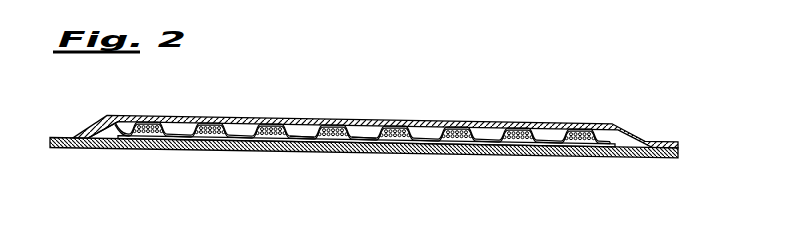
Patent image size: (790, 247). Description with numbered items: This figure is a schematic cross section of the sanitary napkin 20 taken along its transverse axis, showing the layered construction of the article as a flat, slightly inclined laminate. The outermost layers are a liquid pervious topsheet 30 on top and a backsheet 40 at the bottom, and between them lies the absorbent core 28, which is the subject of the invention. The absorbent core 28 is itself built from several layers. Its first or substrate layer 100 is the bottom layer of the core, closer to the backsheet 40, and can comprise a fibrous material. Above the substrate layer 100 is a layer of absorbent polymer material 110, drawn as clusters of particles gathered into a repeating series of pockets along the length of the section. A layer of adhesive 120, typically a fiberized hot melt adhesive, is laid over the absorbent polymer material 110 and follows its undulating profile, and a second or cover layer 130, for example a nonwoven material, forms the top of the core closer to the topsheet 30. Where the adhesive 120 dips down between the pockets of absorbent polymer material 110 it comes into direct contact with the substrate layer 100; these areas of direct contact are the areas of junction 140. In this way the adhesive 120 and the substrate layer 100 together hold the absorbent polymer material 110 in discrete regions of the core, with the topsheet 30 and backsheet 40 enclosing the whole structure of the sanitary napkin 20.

The sanitary napkin 20 is at (374, 126).
The absorbent core 28 is at (112, 134).
The liquid pervious topsheet 30 is at (492, 122).
The backsheet 40 is at (573, 158).
The substrate layer 100 is at (482, 144).
The layer of absorbent polymer material 110 is at (260, 138).
The layer of adhesive 120 is at (216, 128).
The cover layer 130 is at (300, 127).
The areas of junction 140 is at (366, 128).